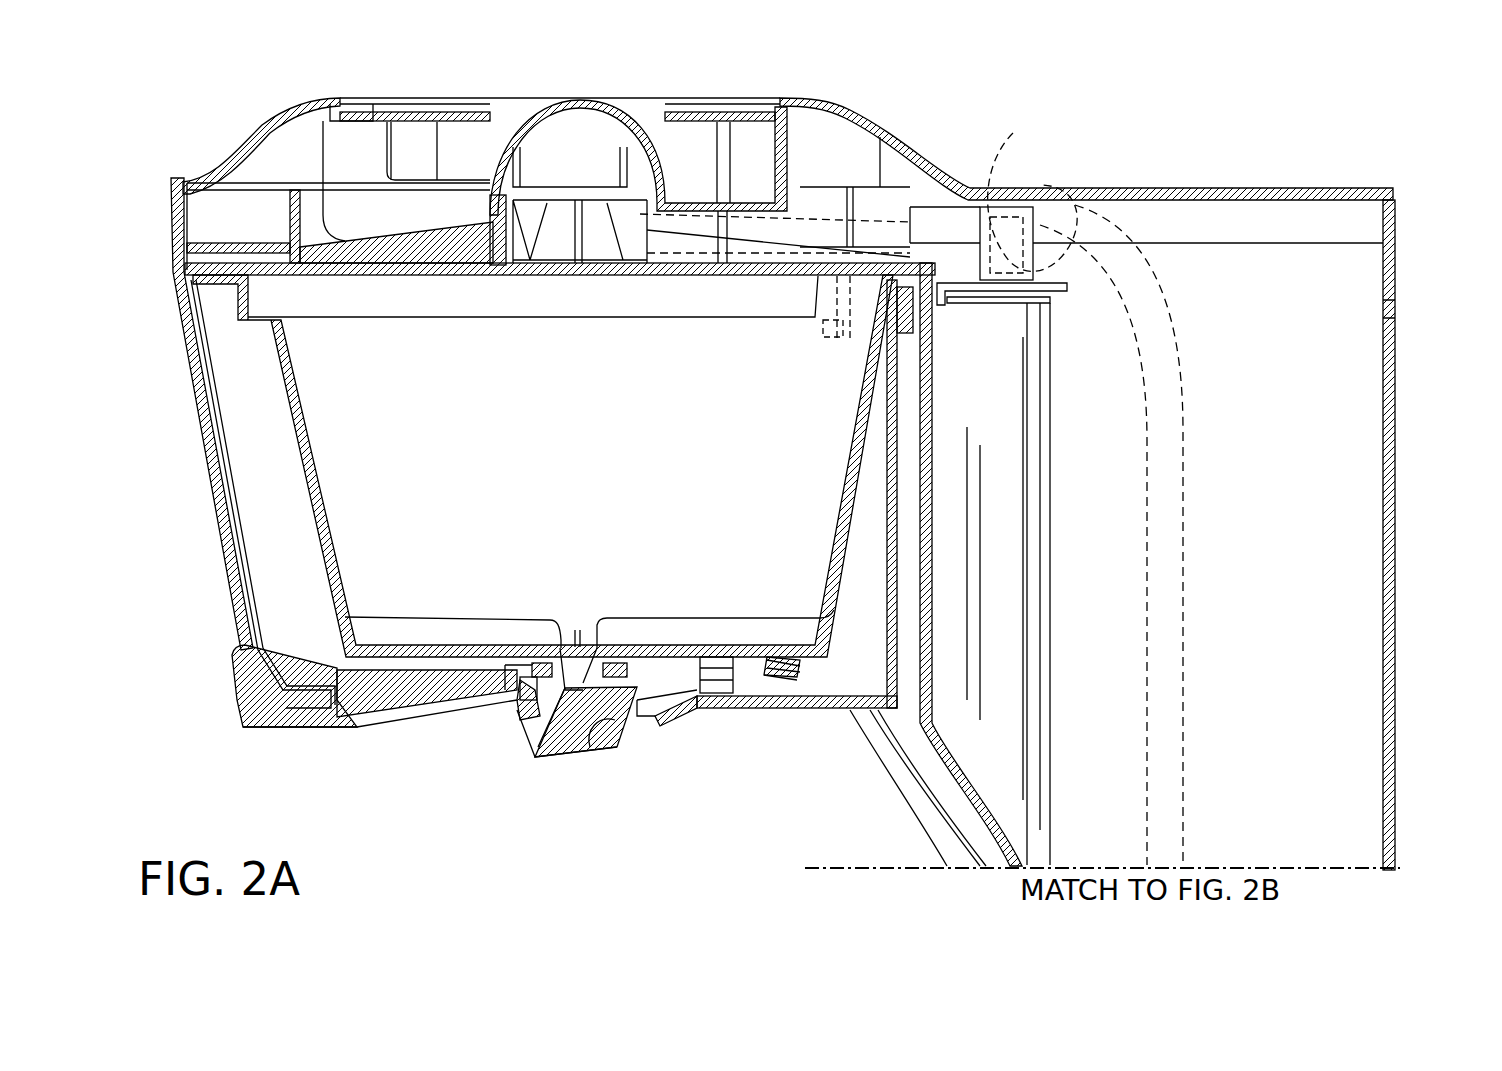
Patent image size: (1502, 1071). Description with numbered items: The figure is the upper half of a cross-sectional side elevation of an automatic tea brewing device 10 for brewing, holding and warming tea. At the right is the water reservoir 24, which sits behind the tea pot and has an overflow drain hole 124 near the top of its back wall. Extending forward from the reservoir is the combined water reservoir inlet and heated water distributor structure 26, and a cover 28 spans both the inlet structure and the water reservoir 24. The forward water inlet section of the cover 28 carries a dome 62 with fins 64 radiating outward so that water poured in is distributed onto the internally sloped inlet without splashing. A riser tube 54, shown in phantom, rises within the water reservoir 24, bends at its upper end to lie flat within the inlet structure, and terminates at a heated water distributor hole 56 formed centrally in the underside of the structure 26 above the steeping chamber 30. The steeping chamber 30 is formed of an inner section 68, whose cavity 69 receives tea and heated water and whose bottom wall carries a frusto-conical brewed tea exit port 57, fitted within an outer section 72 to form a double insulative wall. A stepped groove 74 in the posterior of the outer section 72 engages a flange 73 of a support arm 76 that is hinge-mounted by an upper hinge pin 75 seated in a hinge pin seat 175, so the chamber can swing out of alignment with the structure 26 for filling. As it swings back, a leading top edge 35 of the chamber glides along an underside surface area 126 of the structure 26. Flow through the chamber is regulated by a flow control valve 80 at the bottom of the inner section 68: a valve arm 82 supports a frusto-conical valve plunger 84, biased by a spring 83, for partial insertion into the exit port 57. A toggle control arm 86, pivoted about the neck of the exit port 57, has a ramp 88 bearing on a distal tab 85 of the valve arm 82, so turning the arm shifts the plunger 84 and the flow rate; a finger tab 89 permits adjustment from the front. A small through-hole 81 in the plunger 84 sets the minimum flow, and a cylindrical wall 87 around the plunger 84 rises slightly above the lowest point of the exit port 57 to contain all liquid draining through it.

The automatic tea brewing device 10 is at (1210, 106).
The water reservoir 24 is at (1400, 475).
The combined water reservoir inlet and heated water distributor structure 26 is at (415, 222).
The cover 28 is at (897, 130).
The steeping chamber 30 is at (200, 478).
The leading top edge 35 is at (188, 262).
The riser tube 54 is at (1183, 762).
The heated water distributor hole 56 is at (587, 284).
The brewed tea exit port 57 is at (598, 660).
The dome 62 is at (590, 110).
The fins 64 is at (372, 173).
The inner section 68 is at (290, 388).
The cavity 69 is at (574, 458).
The outer section 72 is at (228, 590).
The flange 73 is at (920, 315).
The stepped groove 74 is at (940, 350).
The upper hinge pin 75 is at (1085, 196).
The steeping chamber support arm 76 is at (943, 812).
The flow control valve 80 is at (520, 786).
The through-hole 81 is at (587, 750).
The valve arm 82 is at (662, 718).
The spring 83 is at (757, 670).
The valve plunger 84 is at (605, 740).
The distal tab 85 is at (505, 717).
The toggle control arm 86 is at (395, 690).
The cylindrical wall 87 is at (530, 728).
The vertical displacement cam or ramp 88 is at (535, 665).
The finger tab 89 is at (238, 675).
The overflow drain hole 124 is at (1383, 312).
The underside surface area 126 is at (418, 282).
The hinge pin seat 175 is at (1013, 133).